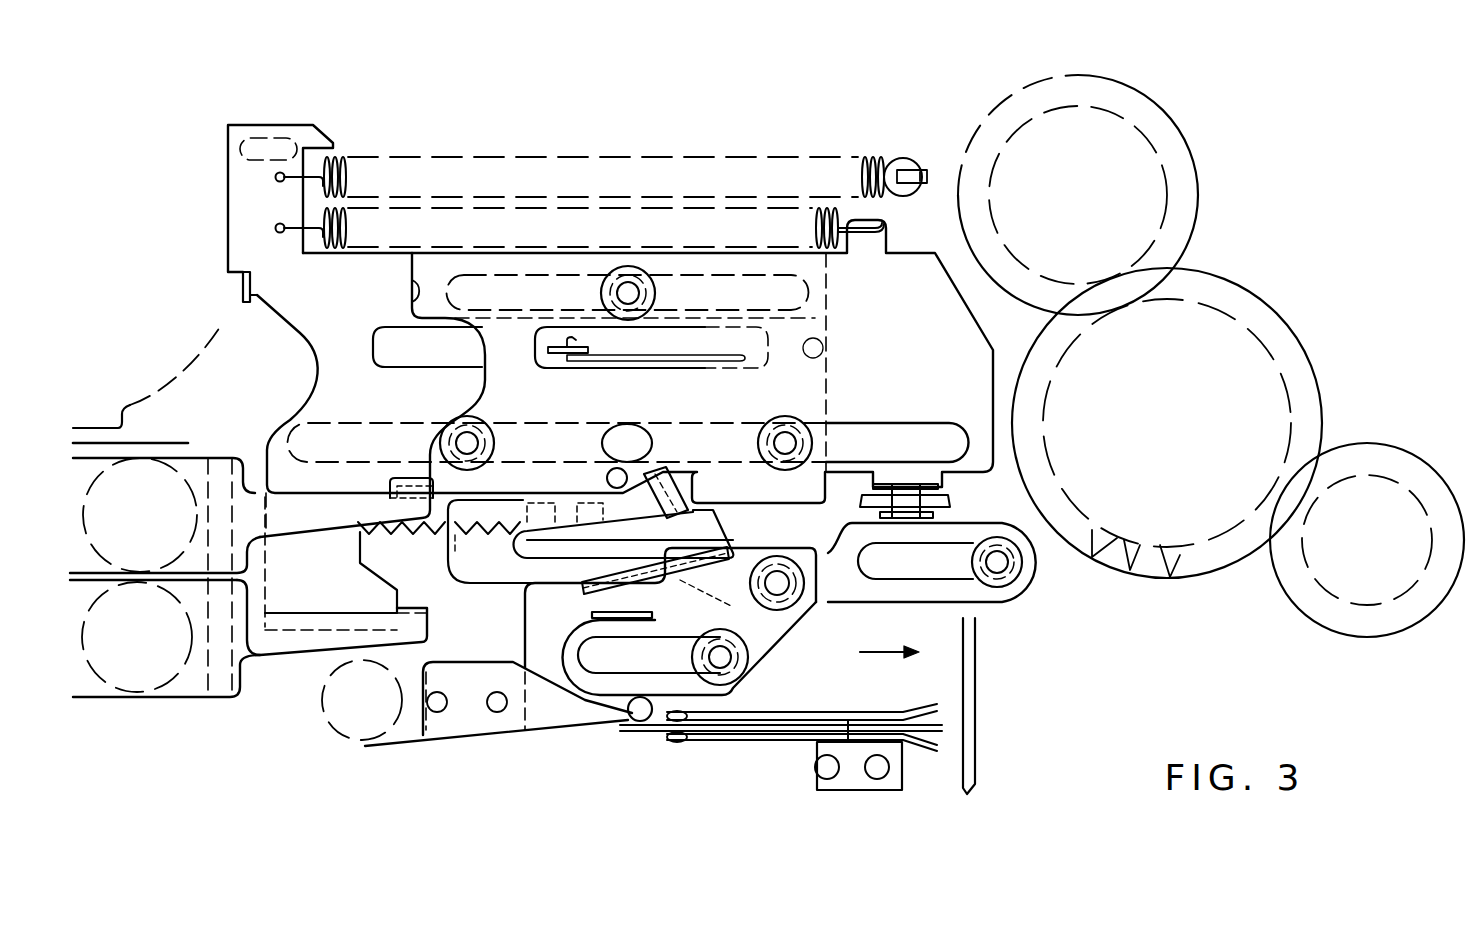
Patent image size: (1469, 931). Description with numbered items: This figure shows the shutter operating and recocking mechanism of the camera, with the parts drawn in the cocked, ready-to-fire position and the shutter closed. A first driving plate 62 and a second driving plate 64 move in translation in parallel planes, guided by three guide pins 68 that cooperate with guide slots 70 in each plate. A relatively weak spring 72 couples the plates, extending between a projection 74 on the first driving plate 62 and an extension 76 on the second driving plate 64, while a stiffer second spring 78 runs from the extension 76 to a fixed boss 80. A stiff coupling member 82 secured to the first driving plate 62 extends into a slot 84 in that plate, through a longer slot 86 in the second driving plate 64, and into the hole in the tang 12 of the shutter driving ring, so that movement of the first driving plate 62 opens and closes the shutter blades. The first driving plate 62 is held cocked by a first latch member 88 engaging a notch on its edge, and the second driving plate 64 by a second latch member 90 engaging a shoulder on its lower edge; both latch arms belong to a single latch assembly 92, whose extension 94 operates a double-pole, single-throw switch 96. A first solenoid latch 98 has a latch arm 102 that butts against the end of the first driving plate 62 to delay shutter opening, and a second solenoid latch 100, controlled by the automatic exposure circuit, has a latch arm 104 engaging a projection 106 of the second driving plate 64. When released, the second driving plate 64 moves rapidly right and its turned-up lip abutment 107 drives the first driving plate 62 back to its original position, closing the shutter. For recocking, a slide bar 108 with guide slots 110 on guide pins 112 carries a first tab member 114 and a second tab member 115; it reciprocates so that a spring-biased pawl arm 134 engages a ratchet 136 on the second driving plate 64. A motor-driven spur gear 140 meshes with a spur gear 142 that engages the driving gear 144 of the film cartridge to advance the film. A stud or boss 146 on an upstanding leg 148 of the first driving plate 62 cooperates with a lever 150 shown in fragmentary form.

The tang 12 is at (535, 346).
The first driving plate 62 is at (966, 345).
The second driving plate 64 is at (310, 341).
The guide pins 68 is at (657, 294).
The guide slots 70 is at (468, 288).
The spring 72 is at (386, 249).
The projection 74 is at (893, 246).
The extension 76 is at (240, 184).
The second spring 78 is at (368, 158).
The fixed boss 80 is at (922, 168).
The coupling member 82 is at (622, 360).
The slot 84 is at (548, 353).
The slot 86 is at (440, 332).
The first latch member 88 is at (672, 498).
The second latch member 90 is at (712, 523).
The latch assembly 92 is at (490, 742).
The extension 94 is at (600, 727).
The double-pole, single-throw switch 96 is at (796, 746).
The first solenoid latch 98 is at (190, 449).
The second solenoid latch 100 is at (236, 706).
The latch arm 102 is at (342, 540).
The latch arm 104 is at (316, 668).
The projection 106 is at (386, 572).
The turned-up lip abutment 107 is at (243, 297).
The slide bar 108 is at (790, 661).
The guide slots 110 is at (666, 645).
The guide pins 112 is at (744, 660).
The first tab member 114 is at (820, 602).
The second tab member 115 is at (592, 613).
The pawl arm 134 is at (657, 590).
The ratchet 136 is at (439, 543).
The spur gear 140 is at (1388, 637).
The spur gear 142 is at (1325, 406).
The driving gear 144 is at (1196, 158).
The stud or boss 146 is at (935, 515).
The upstanding leg 148 is at (940, 487).
The lever 150 is at (870, 494).